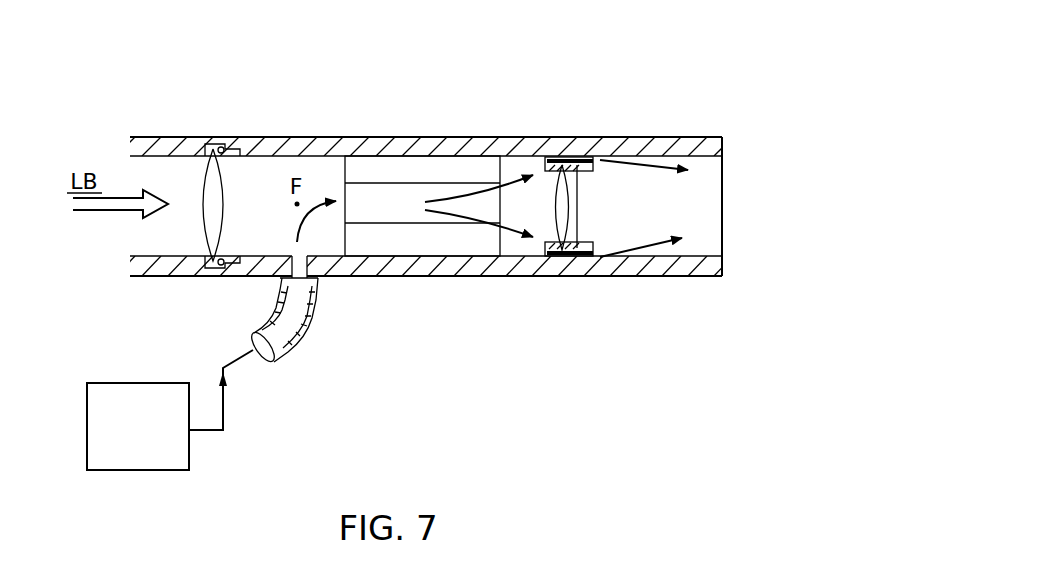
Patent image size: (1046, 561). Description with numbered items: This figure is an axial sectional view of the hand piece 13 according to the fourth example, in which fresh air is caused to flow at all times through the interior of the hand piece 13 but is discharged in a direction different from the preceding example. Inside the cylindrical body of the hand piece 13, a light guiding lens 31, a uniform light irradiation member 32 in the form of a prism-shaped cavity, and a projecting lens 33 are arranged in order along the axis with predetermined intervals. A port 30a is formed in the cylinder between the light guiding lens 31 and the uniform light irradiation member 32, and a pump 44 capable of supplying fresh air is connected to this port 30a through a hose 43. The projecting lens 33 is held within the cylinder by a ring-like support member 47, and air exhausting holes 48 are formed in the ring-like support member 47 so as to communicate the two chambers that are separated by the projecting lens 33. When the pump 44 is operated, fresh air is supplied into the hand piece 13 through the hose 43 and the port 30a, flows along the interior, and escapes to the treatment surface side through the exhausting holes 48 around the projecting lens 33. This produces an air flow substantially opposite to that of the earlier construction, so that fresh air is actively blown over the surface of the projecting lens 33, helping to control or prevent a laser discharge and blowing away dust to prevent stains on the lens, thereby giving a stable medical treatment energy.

The hand piece 13 is at (299, 137).
The light guiding lens 31 is at (198, 175).
The uniform light irradiation member 32 is at (393, 167).
The ring-like support member 47 is at (547, 167).
The air exhausting holes 48 is at (566, 158).
The projecting lens 33 is at (578, 200).
The port 30a is at (318, 328).
The hose 43 is at (223, 410).
The pump 44 is at (88, 385).